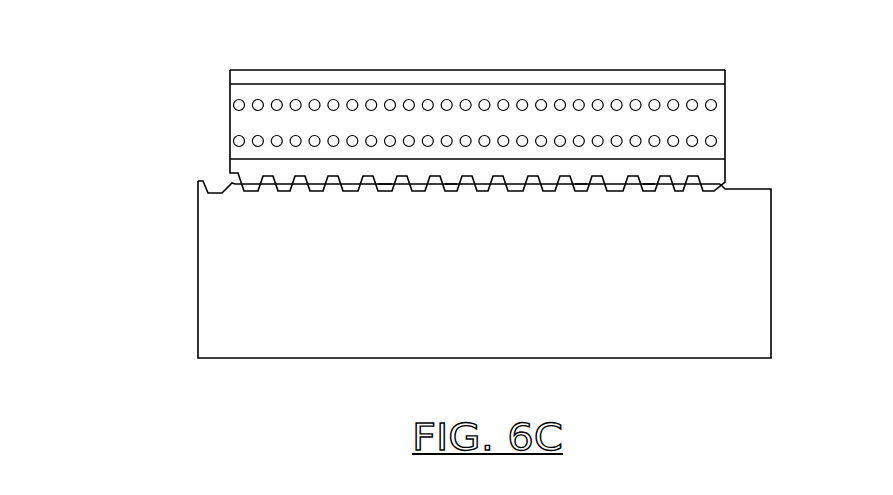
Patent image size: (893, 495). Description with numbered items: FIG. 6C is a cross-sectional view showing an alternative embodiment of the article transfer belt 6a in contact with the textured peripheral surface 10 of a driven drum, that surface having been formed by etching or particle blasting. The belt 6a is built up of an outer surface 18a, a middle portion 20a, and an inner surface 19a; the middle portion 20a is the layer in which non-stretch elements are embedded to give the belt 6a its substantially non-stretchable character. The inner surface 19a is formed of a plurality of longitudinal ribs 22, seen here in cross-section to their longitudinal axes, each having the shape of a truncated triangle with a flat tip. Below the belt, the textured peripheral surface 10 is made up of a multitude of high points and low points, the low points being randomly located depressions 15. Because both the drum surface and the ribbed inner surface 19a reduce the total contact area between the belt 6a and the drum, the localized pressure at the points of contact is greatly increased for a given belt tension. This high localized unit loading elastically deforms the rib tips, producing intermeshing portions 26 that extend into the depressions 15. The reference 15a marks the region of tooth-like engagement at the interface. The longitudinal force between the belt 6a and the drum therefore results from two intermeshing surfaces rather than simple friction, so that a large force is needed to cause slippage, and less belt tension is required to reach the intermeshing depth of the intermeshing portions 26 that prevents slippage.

The textured peripheral surface 10 is at (198, 181).
The article transfer belt 6a is at (422, 149).
The outer surface 18a is at (224, 70).
The middle portion 20a is at (233, 128).
The inner surface 19a is at (422, 150).
The plate teeth 15a is at (477, 150).
The depressions 15 is at (275, 193).
The longitudinal ribs 22 is at (388, 187).
The intermeshing portions 26 is at (456, 192).